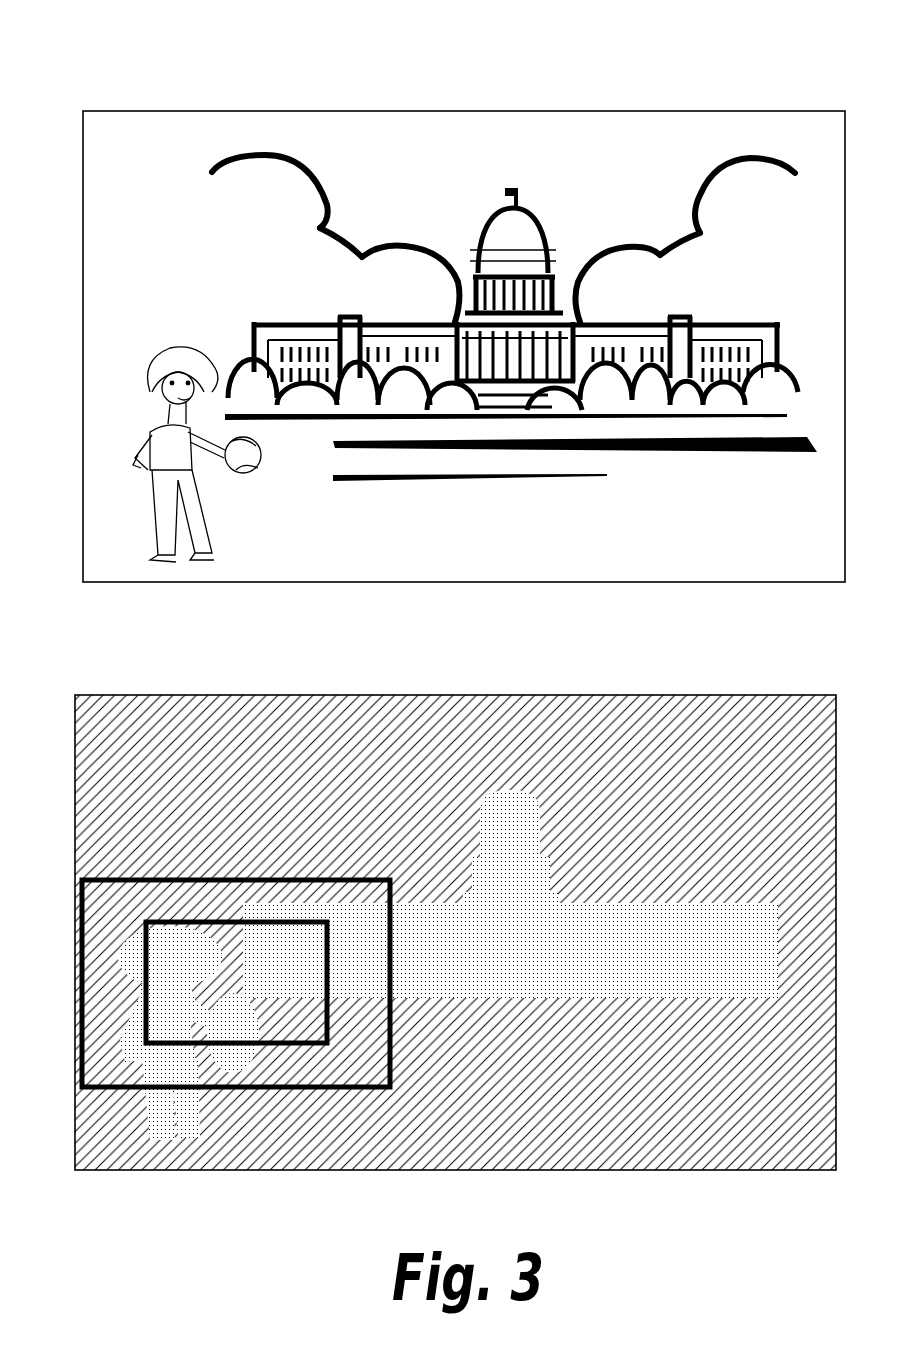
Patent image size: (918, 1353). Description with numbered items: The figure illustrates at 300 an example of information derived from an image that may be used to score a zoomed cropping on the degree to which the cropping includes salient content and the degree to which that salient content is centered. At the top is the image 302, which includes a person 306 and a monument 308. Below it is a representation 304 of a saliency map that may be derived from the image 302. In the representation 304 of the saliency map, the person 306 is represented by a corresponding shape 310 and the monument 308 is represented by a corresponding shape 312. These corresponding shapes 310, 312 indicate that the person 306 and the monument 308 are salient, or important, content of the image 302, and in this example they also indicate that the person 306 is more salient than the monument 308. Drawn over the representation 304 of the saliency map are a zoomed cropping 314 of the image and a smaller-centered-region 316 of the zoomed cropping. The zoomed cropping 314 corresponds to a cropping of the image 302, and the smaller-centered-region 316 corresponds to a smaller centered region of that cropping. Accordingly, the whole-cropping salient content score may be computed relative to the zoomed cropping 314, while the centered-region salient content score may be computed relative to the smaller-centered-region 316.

The example of information derived from an image 300 is at (156, 52).
The image 302 is at (152, 155).
The representation of a saliency map 304 is at (625, 695).
The person 306 is at (150, 345).
The monument 308 is at (508, 218).
The corresponding shape 310 is at (187, 1142).
The corresponding shape 312 is at (477, 823).
The zoomed cropping 314 is at (303, 880).
The smaller-centered-region 316 is at (228, 922).